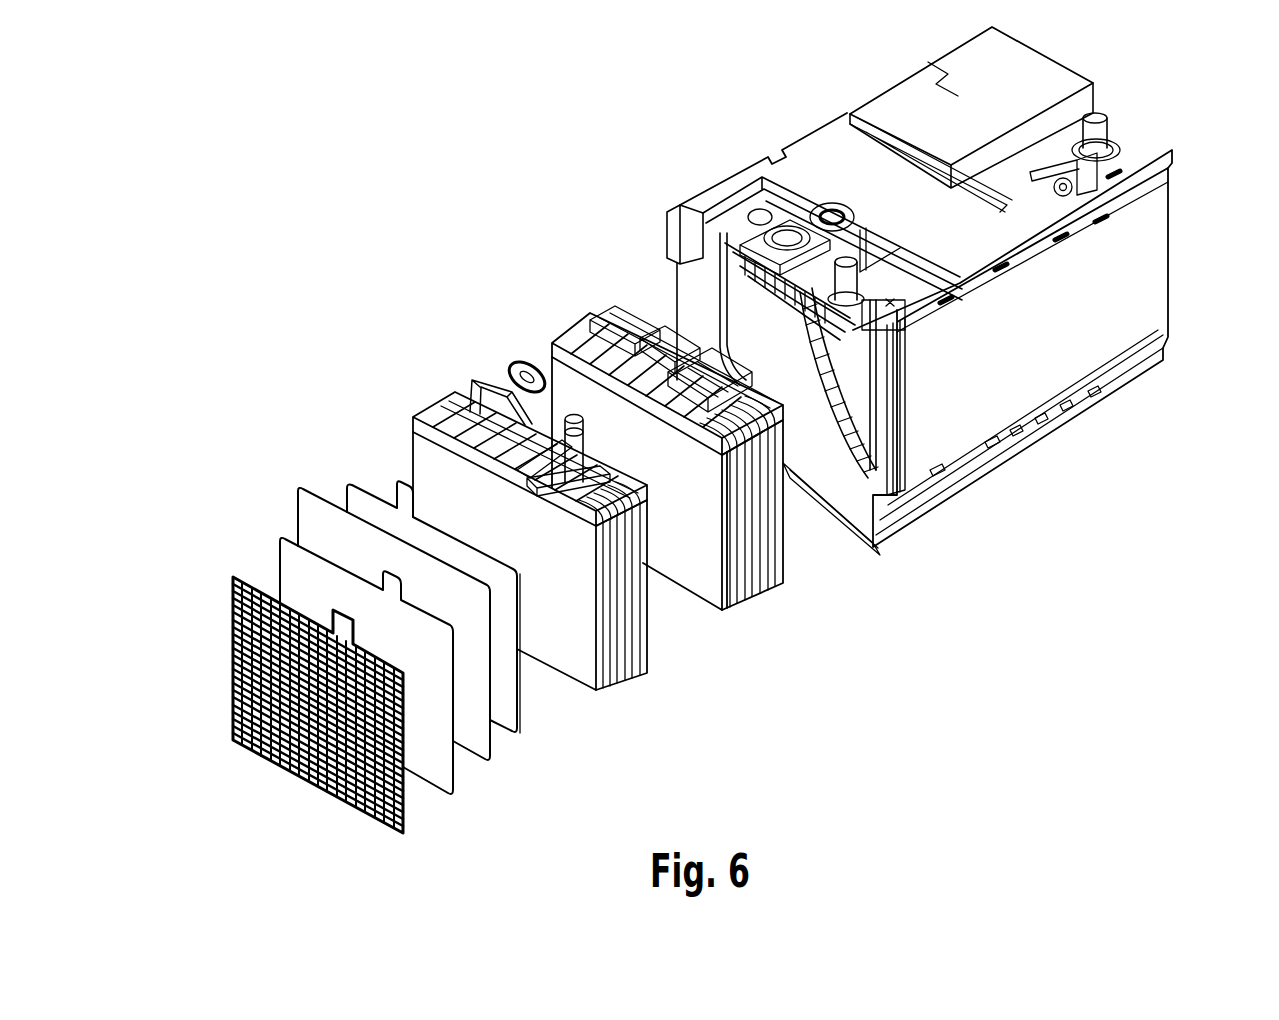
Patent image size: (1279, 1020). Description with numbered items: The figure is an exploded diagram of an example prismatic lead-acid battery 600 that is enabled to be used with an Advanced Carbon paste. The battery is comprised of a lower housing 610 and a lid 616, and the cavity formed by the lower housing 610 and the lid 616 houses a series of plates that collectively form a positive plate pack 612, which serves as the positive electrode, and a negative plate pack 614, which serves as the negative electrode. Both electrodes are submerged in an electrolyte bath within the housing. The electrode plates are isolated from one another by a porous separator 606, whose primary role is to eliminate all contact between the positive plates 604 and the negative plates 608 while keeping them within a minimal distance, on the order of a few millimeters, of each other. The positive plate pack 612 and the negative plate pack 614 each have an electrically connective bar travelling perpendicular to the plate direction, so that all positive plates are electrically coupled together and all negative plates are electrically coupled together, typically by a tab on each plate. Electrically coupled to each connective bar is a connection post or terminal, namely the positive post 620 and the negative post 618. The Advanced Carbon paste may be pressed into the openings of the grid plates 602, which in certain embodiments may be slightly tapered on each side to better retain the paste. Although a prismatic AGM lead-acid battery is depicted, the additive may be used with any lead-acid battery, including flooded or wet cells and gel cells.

The prismatic lead-acid battery 600 is at (1171, 132).
The grid plates 602 is at (224, 544).
The positive plates 604 is at (461, 808).
The porous separator 606 is at (497, 778).
The negative plates 608 is at (527, 748).
The lower housing 610 is at (1033, 393).
The positive plate pack 612 is at (457, 403).
The negative plate pack 614 is at (633, 677).
The lid 616 is at (789, 162).
The negative post 618 is at (1127, 188).
The positive post 620 is at (855, 293).